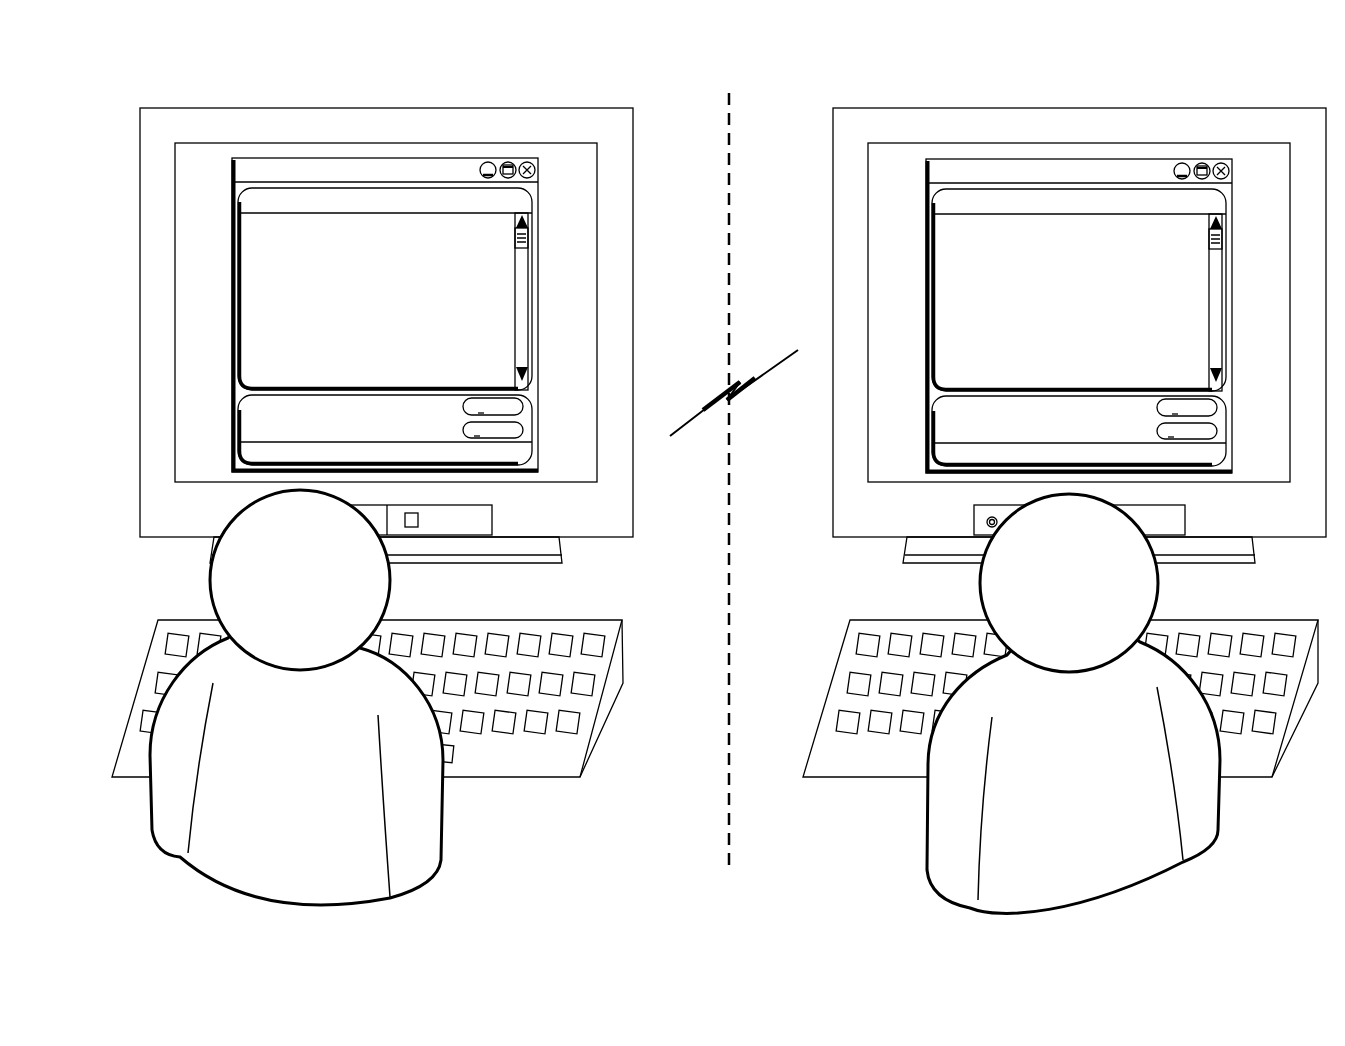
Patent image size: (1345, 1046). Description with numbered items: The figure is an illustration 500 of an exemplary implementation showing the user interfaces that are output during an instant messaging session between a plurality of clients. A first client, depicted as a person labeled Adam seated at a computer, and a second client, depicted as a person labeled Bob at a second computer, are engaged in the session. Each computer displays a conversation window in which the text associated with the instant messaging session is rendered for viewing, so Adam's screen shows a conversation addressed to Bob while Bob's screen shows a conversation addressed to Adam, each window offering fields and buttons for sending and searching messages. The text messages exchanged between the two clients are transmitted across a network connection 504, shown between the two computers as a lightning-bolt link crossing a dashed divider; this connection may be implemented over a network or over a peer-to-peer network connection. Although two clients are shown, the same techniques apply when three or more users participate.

The illustration 500 is at (268, 86).
The network connection 504 is at (705, 412).